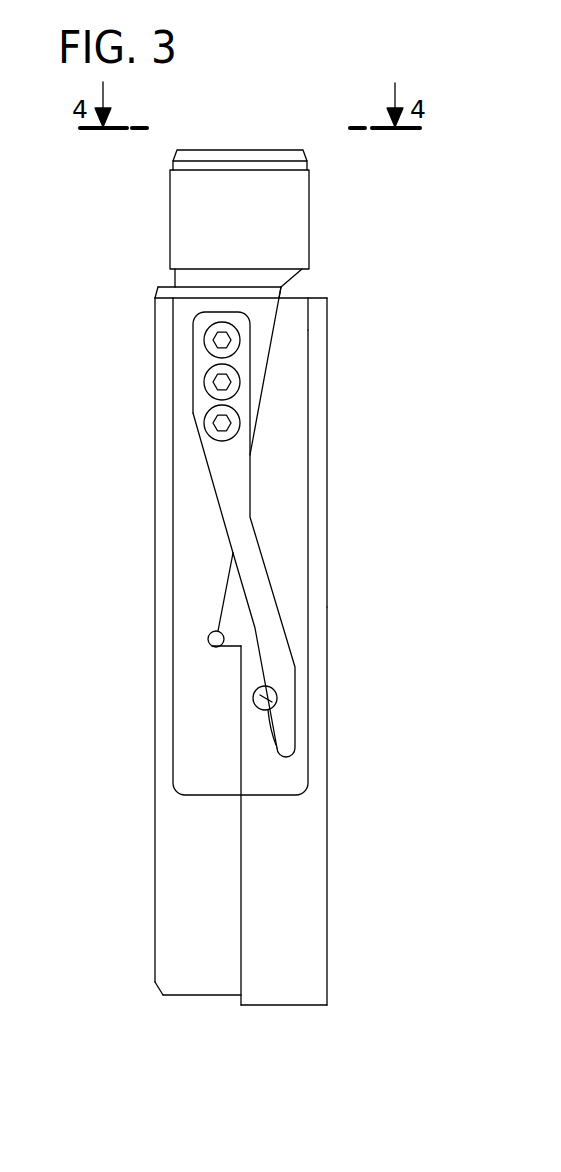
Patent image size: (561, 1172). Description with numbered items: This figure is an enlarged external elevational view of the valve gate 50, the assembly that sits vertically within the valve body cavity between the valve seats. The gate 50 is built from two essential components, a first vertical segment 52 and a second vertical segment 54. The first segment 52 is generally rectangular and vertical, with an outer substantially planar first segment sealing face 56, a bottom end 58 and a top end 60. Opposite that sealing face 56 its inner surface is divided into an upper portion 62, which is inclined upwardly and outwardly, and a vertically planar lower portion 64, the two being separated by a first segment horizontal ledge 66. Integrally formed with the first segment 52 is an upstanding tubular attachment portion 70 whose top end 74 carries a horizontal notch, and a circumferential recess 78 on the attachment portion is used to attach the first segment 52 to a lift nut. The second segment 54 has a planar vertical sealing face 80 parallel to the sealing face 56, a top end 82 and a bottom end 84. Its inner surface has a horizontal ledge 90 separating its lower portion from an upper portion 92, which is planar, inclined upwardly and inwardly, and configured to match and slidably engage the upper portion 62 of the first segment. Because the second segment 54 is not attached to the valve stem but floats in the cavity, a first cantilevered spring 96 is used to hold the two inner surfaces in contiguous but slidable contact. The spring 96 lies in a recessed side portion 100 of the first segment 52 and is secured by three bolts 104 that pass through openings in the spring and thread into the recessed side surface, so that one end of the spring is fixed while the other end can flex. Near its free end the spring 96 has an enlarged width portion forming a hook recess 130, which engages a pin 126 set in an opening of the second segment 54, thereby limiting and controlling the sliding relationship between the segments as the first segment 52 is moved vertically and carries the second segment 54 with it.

The valve gate 50 is at (382, 515).
The first vertical segment 52 is at (156, 984).
The second vertical segment 54 is at (328, 1004).
The first segment sealing face 56 is at (155, 446).
The bottom end 58 is at (197, 996).
The top end 60 is at (201, 297).
The upper portion of first segment inner surface 62 is at (260, 408).
The lower portion of first segment inner surface 64 is at (243, 881).
The first segment horizontal ledge 66 is at (218, 624).
The tubular attachment portion 70 is at (292, 218).
The top end of attachment portion 74 is at (242, 150).
The circumferential recess 78 is at (306, 275).
The top end of second segment 82 is at (308, 298).
The second segment sealing face 80 is at (328, 607).
The bottom end of second segment 84 is at (275, 1006).
The second segment horizontal ledge 90 is at (238, 652).
The upper portion of second segment inner surface 92 is at (262, 352).
The first cantilevered spring 96 is at (227, 503).
The recessed side portion 100 is at (190, 587).
The bolts 104 is at (204, 425).
The pin 126 is at (250, 690).
The hook recess 130 is at (257, 708).